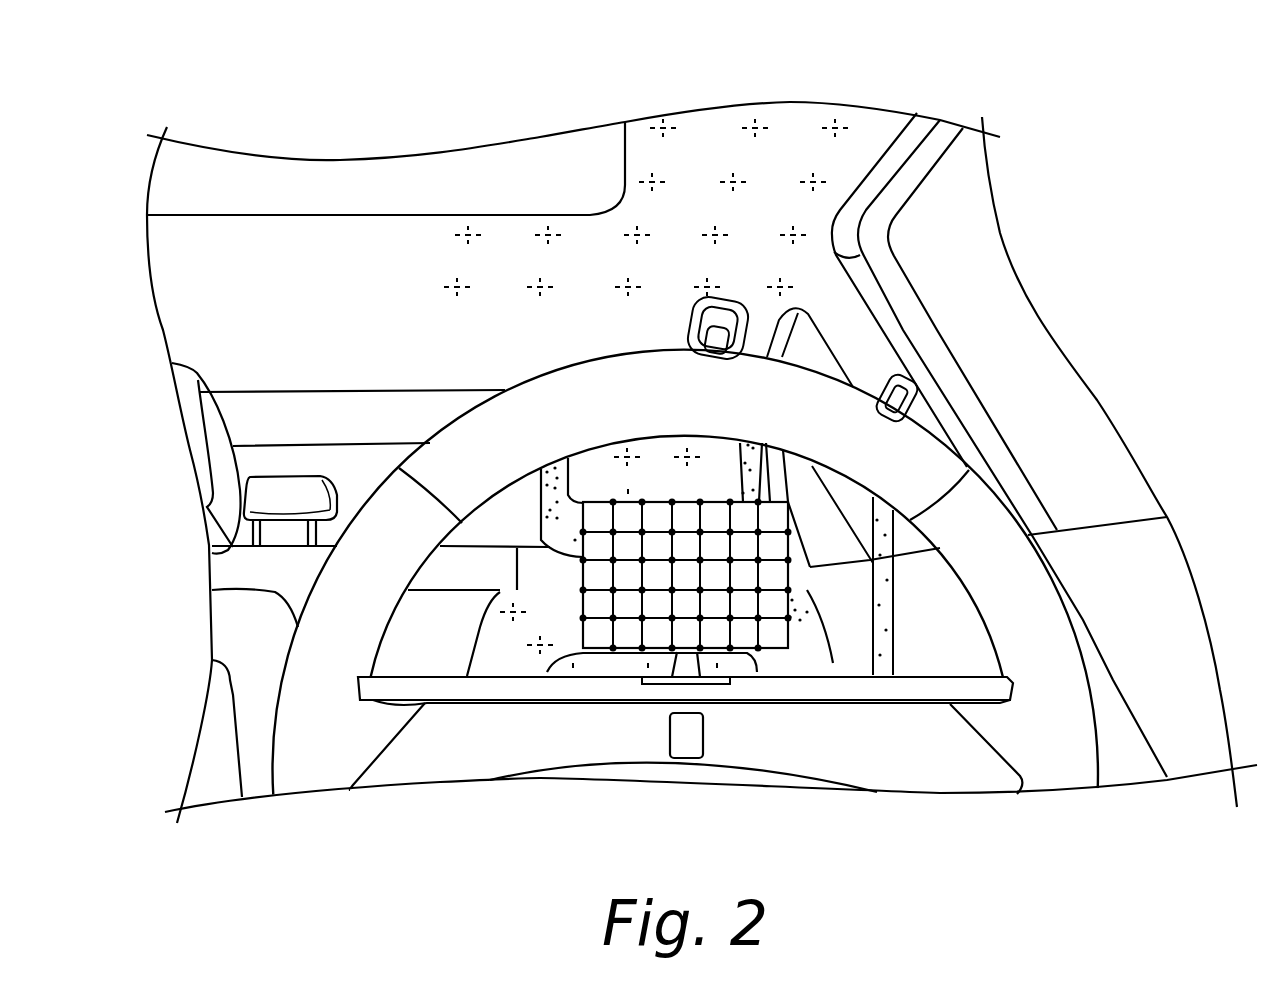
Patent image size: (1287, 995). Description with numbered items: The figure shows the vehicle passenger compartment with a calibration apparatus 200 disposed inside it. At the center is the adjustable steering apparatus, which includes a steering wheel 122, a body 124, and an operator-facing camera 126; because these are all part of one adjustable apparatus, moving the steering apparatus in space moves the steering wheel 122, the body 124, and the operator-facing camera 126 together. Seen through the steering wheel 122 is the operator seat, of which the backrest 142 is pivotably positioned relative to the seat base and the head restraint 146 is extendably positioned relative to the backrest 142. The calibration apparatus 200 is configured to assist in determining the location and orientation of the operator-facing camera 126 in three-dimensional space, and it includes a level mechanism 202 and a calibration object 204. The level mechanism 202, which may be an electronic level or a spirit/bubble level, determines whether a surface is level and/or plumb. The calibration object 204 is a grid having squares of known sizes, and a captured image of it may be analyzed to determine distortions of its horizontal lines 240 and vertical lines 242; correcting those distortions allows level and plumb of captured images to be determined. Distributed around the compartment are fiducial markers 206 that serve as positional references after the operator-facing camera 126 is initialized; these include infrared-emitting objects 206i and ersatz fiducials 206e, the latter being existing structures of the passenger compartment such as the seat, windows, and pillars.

The steering wheel 122 is at (705, 401).
The body 124 is at (818, 775).
The operator-facing camera 126 is at (705, 725).
The backrest 142 is at (470, 652).
The head restraint 146 is at (550, 498).
The calibration apparatus 200 is at (980, 712).
The level mechanism 202 is at (655, 682).
The calibration object 204 is at (773, 543).
The fiducial markers 206 is at (686, 212).
The infrared-emitting objects 206i is at (662, 135).
The ersatz fiducials 206e is at (933, 172).
The horizontal lines 240 is at (683, 530).
The vertical lines 242 is at (760, 575).